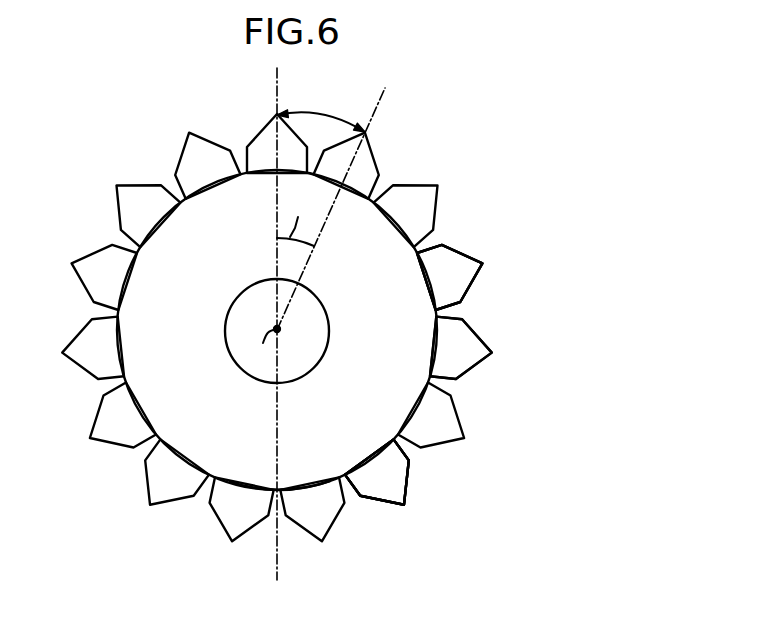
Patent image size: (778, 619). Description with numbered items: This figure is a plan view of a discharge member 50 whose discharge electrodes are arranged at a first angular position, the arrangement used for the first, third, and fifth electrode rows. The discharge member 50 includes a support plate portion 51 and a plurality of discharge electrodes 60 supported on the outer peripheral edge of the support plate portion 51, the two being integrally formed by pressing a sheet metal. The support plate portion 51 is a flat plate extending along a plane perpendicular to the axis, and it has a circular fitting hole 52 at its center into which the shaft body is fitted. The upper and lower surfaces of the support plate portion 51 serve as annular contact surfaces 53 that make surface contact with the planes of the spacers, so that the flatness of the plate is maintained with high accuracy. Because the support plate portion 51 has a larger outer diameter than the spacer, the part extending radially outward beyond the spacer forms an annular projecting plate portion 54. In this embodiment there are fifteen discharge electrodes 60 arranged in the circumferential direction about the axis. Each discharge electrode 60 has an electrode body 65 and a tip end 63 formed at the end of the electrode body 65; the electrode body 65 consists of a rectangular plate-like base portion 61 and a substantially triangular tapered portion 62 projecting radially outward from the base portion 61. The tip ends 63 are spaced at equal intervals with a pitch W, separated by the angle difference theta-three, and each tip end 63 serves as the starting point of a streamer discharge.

The discharge member 50 is at (364, 334).
The support plate portion 51 is at (487, 363).
The fitting hole 52 is at (226, 342).
The contact surface 53 is at (363, 355).
The projecting plate portion 54 is at (283, 470).
The discharge electrode 60 is at (117, 207).
The base portion 61 is at (392, 463).
The tapered portion 62 is at (400, 488).
The tip end 63 is at (483, 265).
The electrode body 65 is at (457, 278).